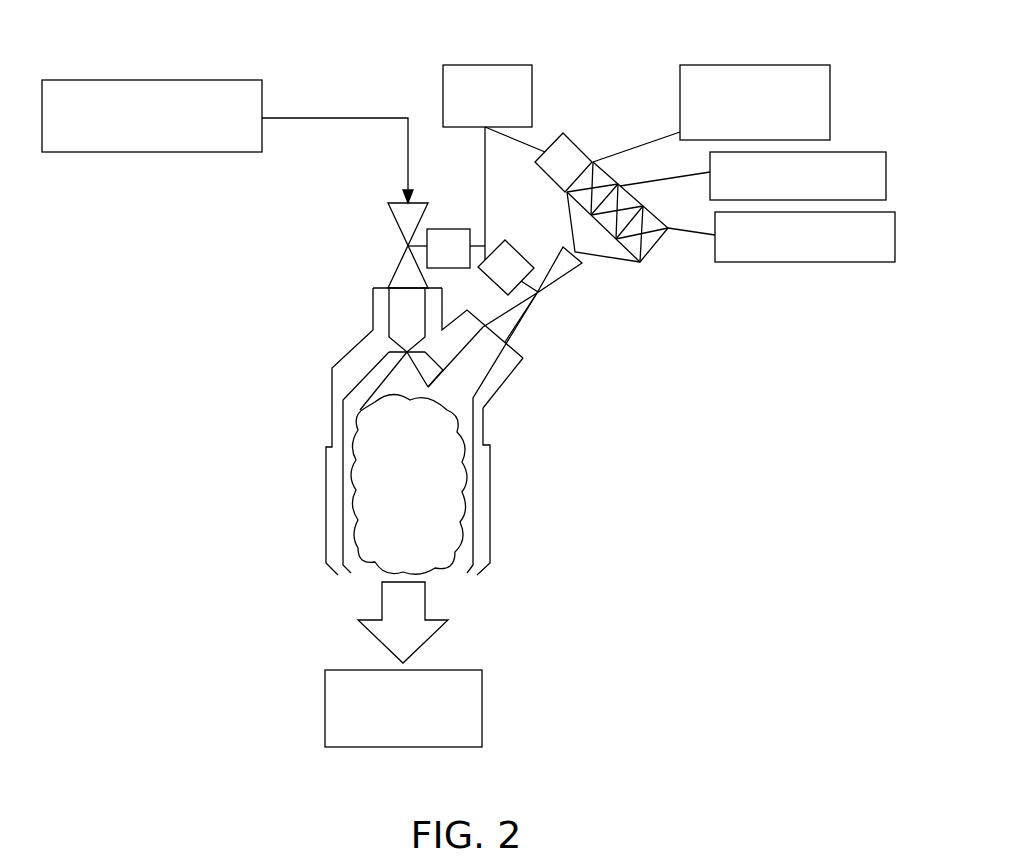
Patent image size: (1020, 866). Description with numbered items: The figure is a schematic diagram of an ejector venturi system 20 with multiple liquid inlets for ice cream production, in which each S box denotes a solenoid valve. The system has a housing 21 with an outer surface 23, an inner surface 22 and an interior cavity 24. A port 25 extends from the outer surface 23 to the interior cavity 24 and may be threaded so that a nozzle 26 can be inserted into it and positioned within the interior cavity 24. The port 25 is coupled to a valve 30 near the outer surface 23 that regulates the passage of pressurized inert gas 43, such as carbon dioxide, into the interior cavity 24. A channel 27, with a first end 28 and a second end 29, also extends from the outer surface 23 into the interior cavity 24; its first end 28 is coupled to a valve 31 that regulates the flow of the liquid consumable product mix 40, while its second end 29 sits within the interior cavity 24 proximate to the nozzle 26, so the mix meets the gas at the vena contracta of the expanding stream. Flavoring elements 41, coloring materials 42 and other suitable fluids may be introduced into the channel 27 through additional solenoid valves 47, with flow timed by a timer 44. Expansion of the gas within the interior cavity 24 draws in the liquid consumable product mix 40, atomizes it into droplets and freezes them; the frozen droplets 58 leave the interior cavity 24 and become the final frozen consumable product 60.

The ejector venturi system 20 is at (620, 605).
The housing 21 is at (491, 486).
The inner surface 22 is at (352, 572).
The outer surface 23 is at (491, 546).
The interior cavity 24 is at (343, 418).
The port 25 is at (380, 287).
The nozzle 26 is at (407, 352).
The channel 27 is at (512, 376).
The first end 28 is at (527, 356).
The second end 29 is at (487, 412).
The valve 30 is at (446, 229).
The valve 31 is at (520, 248).
The liquid consumable product mix 40 is at (770, 65).
The flavoring elements 41 is at (860, 152).
The coloring materials 42 is at (895, 237).
The pressurized inert gas 43 is at (160, 80).
The timer 44 is at (489, 65).
The additional solenoid valves 47 is at (572, 138).
The frozen droplets 58 is at (428, 553).
The final frozen consumable product 60 is at (467, 713).